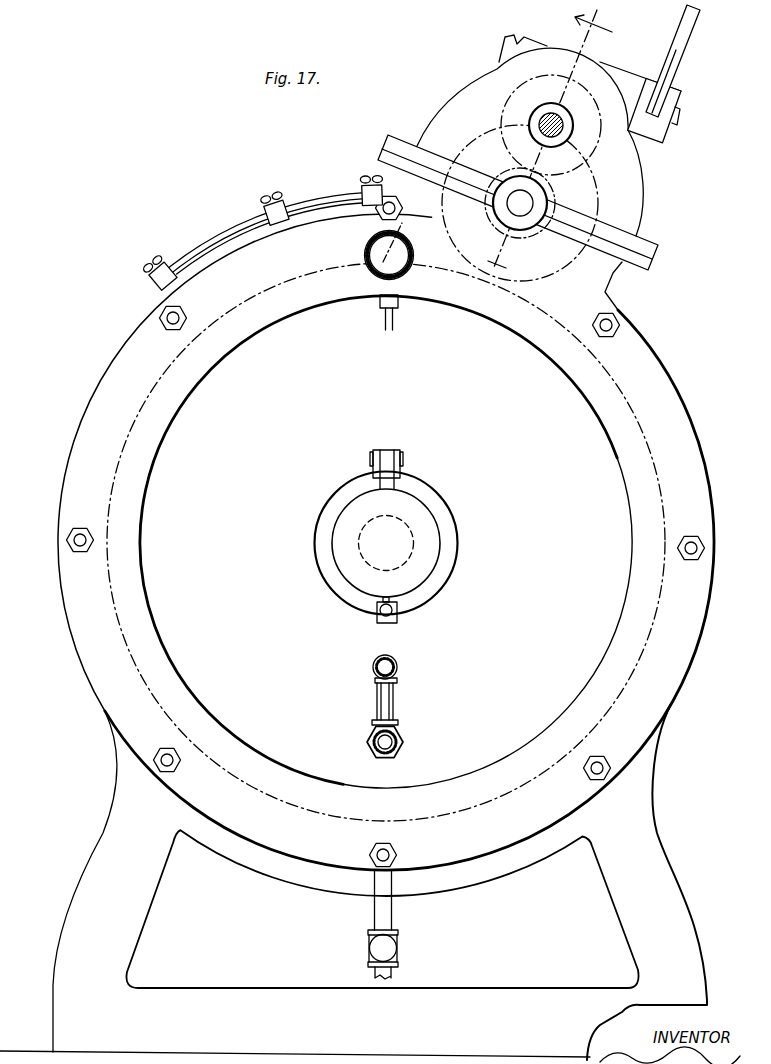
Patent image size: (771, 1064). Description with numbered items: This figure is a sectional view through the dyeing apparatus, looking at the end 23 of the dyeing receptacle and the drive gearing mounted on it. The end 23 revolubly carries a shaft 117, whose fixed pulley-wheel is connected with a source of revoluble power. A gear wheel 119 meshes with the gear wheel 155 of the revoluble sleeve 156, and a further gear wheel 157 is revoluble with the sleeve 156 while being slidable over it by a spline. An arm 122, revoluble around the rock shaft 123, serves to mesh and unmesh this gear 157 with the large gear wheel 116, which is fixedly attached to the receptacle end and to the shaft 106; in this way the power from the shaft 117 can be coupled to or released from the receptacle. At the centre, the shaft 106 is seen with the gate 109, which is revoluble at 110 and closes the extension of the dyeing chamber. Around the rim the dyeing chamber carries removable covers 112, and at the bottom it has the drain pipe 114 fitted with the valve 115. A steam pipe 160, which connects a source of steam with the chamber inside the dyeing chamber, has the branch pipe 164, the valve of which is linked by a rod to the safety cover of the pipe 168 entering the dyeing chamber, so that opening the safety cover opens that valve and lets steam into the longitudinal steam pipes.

The end 23 is at (572, 408).
The shaft 106 is at (365, 523).
The gate 109 is at (323, 563).
The pivot of gate 110 is at (373, 463).
The removable cover 112 is at (223, 233).
The drain pipe 114 is at (376, 918).
The valve 115 is at (369, 950).
The gear wheel 116 is at (642, 427).
The shaft 117 is at (543, 113).
The gear wheel 119 is at (622, 140).
The arm 122 is at (683, 40).
The rock shaft 123 is at (677, 115).
The gear wheel 155 is at (593, 188).
The revoluble sleeve 156 is at (518, 200).
The gear wheel 157 is at (598, 199).
The steam pipe 160 is at (373, 747).
The branch pipe 164 is at (378, 707).
The pipe 168 is at (366, 248).